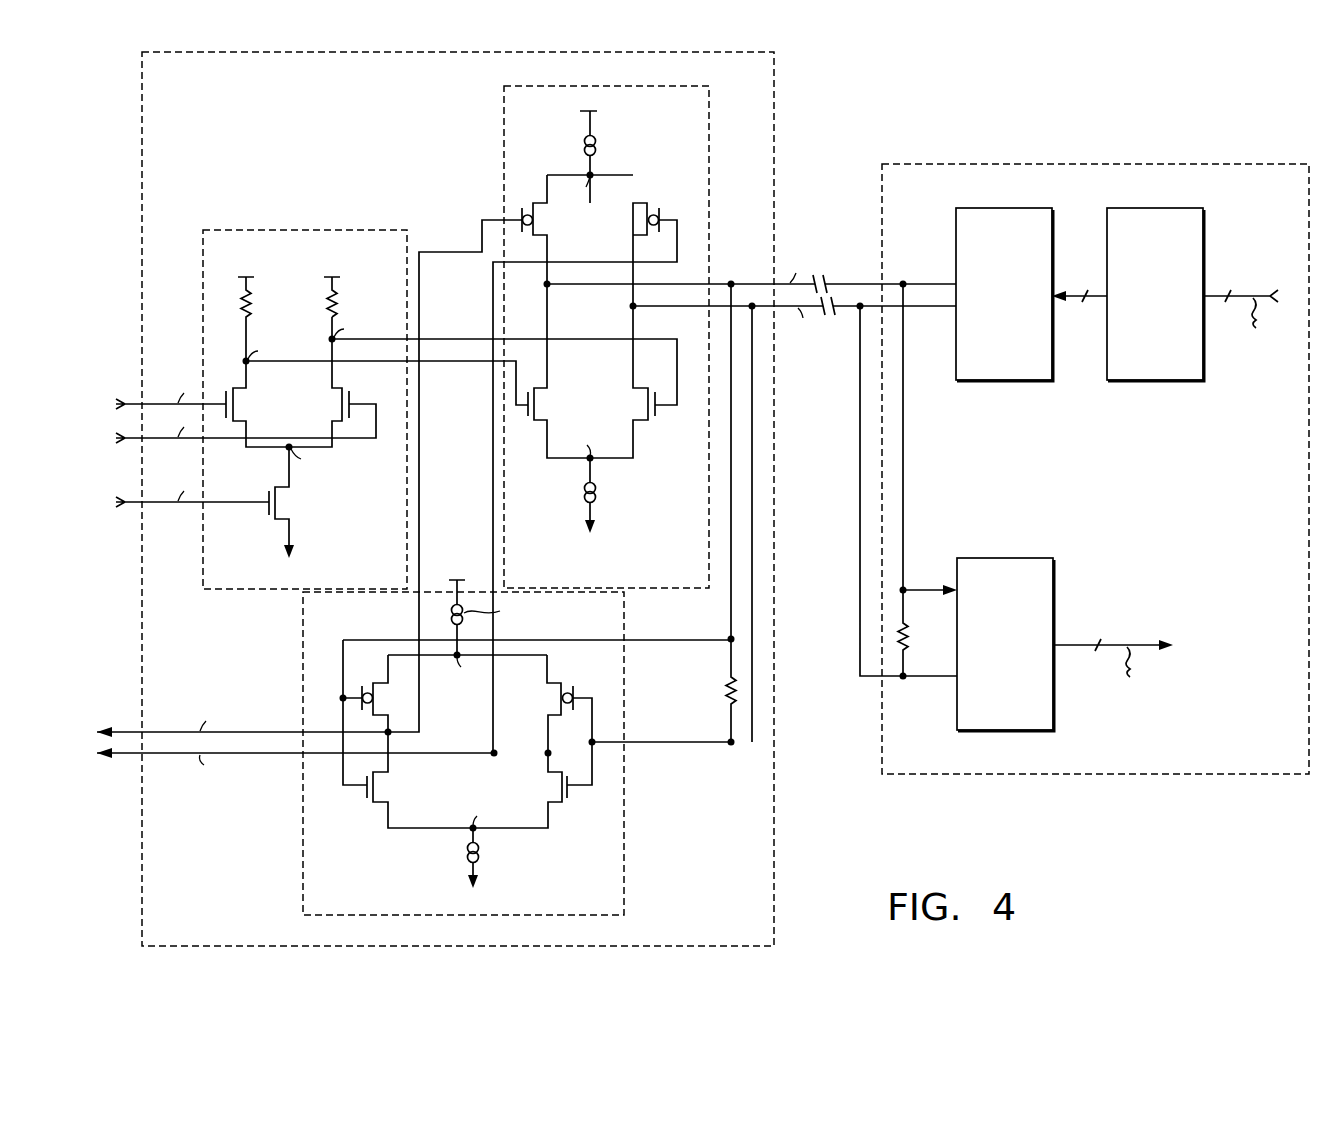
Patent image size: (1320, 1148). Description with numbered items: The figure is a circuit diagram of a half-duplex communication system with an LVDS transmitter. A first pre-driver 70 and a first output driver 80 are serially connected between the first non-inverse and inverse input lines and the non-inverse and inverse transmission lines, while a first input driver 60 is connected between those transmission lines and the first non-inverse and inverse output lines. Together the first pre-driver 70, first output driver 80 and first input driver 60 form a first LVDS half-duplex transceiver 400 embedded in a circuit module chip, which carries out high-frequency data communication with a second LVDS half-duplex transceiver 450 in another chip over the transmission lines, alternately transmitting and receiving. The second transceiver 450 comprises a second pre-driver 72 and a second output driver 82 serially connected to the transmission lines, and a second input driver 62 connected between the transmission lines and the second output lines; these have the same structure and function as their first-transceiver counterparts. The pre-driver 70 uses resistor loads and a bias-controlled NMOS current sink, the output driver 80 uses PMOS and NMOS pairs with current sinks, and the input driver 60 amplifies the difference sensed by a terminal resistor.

The first LVDS half-duplex transceiver 400 is at (774, 138).
The second LVDS half-duplex transceiver 450 is at (1075, 164).
The first pre-driver 70 is at (303, 230).
The first output driver 80 is at (611, 86).
The first input driver 60 is at (624, 821).
The second output driver 82 is at (1003, 208).
The second pre-driver 72 is at (1154, 208).
The second input driver 62 is at (1004, 558).